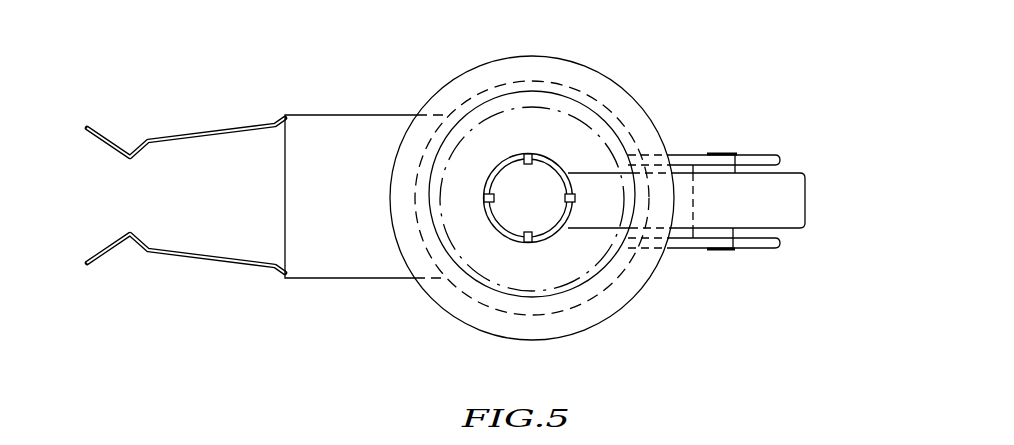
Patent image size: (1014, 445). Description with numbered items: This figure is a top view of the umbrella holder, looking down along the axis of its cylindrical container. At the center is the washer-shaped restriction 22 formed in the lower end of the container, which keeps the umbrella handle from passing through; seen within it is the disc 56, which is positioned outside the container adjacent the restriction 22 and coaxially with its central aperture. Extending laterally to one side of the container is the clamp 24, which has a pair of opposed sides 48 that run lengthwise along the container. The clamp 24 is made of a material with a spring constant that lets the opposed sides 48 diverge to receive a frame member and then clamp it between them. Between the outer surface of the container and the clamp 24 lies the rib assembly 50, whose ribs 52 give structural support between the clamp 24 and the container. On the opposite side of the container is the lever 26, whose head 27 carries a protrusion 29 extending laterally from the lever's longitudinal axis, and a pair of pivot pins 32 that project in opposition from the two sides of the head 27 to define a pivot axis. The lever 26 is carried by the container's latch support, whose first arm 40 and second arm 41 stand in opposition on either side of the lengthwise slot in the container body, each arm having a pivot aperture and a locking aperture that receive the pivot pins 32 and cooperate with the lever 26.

The restriction 22 is at (498, 144).
The clamp 24 is at (234, 179).
The lever 26 is at (742, 200).
The head 27 is at (725, 211).
The protrusion 29 is at (595, 182).
The pivot pins 32 is at (722, 170).
The first arm 40 is at (770, 245).
The second arm 41 is at (773, 157).
The opposed sides 48 is at (197, 127).
The rib assembly 50 is at (502, 173).
The ribs 52 is at (362, 250).
The disc 56 is at (516, 213).